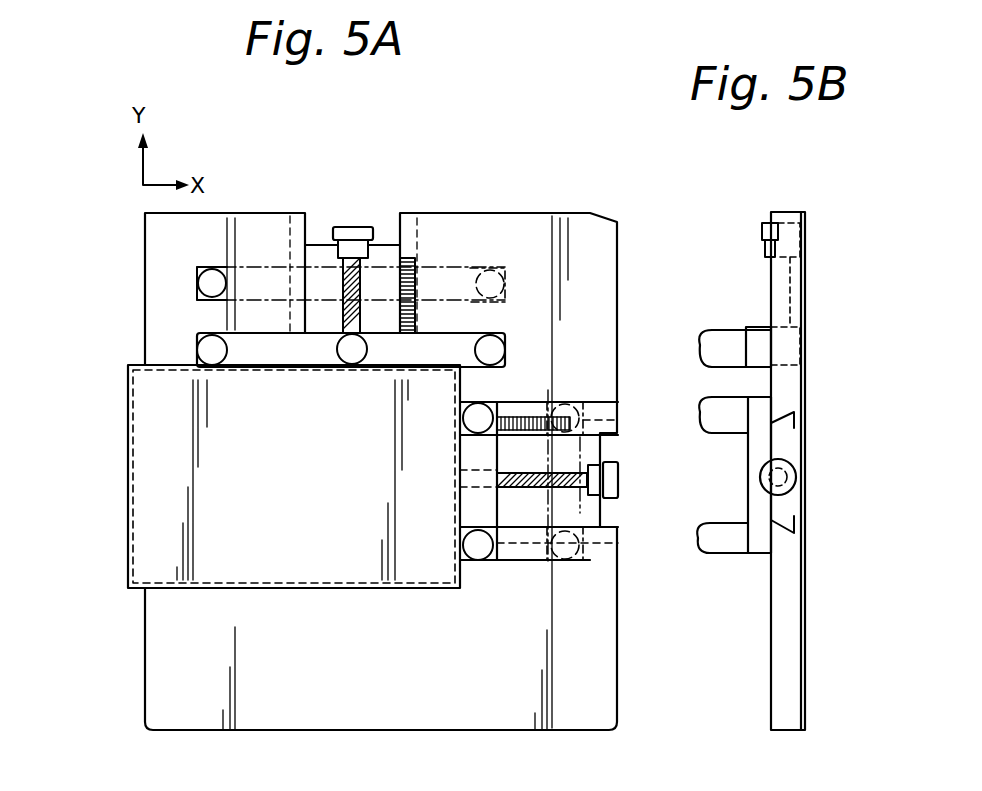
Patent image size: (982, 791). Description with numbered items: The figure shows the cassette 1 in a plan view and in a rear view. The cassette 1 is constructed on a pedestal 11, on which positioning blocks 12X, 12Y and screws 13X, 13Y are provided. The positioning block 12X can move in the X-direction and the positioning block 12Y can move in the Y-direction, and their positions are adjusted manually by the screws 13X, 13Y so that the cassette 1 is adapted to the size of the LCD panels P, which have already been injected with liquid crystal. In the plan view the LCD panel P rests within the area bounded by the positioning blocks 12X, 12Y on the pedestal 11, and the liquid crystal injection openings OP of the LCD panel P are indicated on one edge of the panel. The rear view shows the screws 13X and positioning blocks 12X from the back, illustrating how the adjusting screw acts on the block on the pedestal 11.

In FIG. 5A, the cassette 1 is at (502, 170).
In FIG. 5A, the pedestal 11 is at (597, 697).
In FIG. 5A, the positioning block 12X is at (487, 400).
In FIG. 5B, the positioning block 12X is at (732, 557).
In FIG. 5A, the positioning block 12Y is at (253, 332).
In FIG. 5A, the screw 13X is at (620, 474).
In FIG. 5B, the screw 13X is at (783, 458).
In FIG. 5A, the screw 13Y is at (350, 225).
In FIG. 5A, the LCD panel P is at (294, 476).
In FIG. 5A, the liquid crystal injection opening OP is at (122, 514).